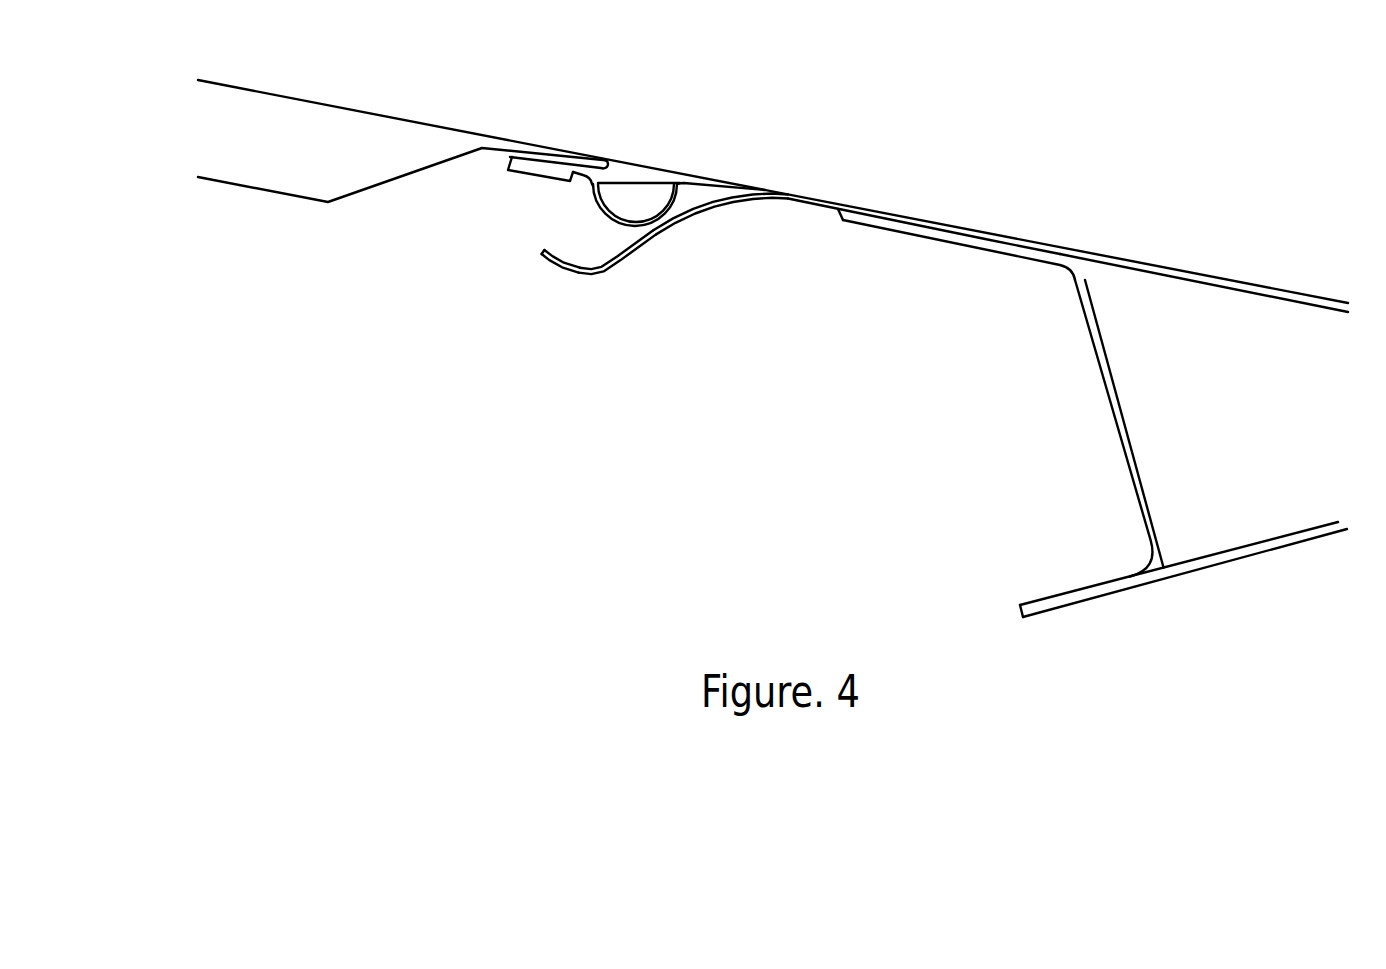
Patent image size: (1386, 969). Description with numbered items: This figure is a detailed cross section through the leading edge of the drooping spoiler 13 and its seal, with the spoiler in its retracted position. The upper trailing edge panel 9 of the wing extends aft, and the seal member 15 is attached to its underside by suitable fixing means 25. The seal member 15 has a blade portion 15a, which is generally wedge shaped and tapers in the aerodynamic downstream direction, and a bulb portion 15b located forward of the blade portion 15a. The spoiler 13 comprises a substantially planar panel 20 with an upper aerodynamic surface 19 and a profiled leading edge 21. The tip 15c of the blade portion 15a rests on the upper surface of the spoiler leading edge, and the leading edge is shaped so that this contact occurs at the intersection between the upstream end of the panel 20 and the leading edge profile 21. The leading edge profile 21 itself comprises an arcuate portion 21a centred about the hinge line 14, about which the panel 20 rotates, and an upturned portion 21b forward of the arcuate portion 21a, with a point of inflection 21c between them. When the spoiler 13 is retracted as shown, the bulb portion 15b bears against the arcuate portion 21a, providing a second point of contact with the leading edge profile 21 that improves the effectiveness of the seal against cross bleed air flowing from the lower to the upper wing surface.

The upper trailing edge panel 9 is at (318, 113).
The drooping spoiler 13 is at (1093, 412).
The hinge line 14 is at (753, 367).
The seal member 15 is at (633, 167).
The blade portion 15a is at (685, 172).
The bulb portion 15b is at (612, 203).
The tip 15c is at (757, 190).
The upper aerodynamic surface 19 is at (1008, 233).
The panel 20 is at (1178, 278).
The leading edge profile 21 is at (654, 266).
The arcuate portion 21a is at (702, 208).
The upturned portion 21b is at (550, 263).
The point of inflection 21c is at (608, 268).
The fixing means 25 is at (540, 172).